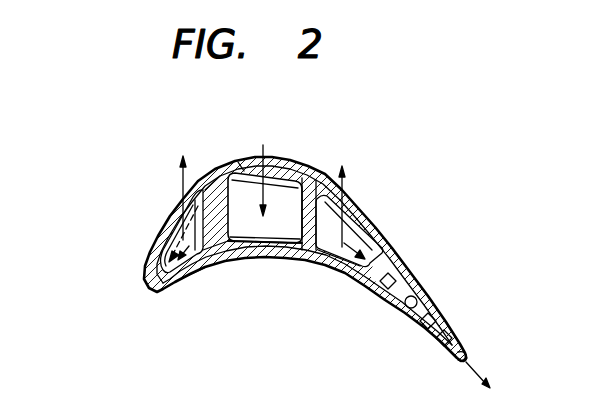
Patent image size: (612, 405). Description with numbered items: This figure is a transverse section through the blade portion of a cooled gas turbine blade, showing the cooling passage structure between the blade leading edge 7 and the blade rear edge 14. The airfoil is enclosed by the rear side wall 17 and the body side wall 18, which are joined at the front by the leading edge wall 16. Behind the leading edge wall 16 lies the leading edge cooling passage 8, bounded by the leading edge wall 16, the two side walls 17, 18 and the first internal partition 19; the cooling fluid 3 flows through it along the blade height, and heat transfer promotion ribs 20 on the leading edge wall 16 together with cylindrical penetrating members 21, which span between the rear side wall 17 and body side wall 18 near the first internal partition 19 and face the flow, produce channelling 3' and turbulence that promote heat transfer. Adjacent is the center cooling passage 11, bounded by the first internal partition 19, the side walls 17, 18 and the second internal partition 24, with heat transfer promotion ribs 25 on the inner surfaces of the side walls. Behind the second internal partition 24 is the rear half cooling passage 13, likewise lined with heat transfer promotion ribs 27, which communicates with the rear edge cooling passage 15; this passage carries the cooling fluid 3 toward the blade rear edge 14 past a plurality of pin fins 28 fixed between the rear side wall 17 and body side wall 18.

The cooling fluid 3 is at (251, 181).
The channelling 3' is at (145, 234).
The blade leading edge 7 is at (148, 285).
The leading edge cooling passage 8 is at (192, 277).
The center cooling passage 11 is at (280, 226).
The rear half cooling passage 13 is at (354, 268).
The blade rear edge 14 is at (468, 358).
The rear edge cooling passage 15 is at (410, 312).
The leading edge wall 16 is at (160, 292).
The rear side wall 17 is at (174, 200).
The body side wall 18 is at (256, 260).
The first internal partition 19 is at (218, 180).
The heat transfer promotion ribs 20 is at (162, 230).
The cylindrical penetrating members 21 is at (208, 258).
The second internal partition 24 is at (305, 258).
The heat transfer promotion ribs 25 is at (242, 172).
The heat transfer promotion ribs 27 is at (360, 213).
The pin fins 28 is at (402, 285).